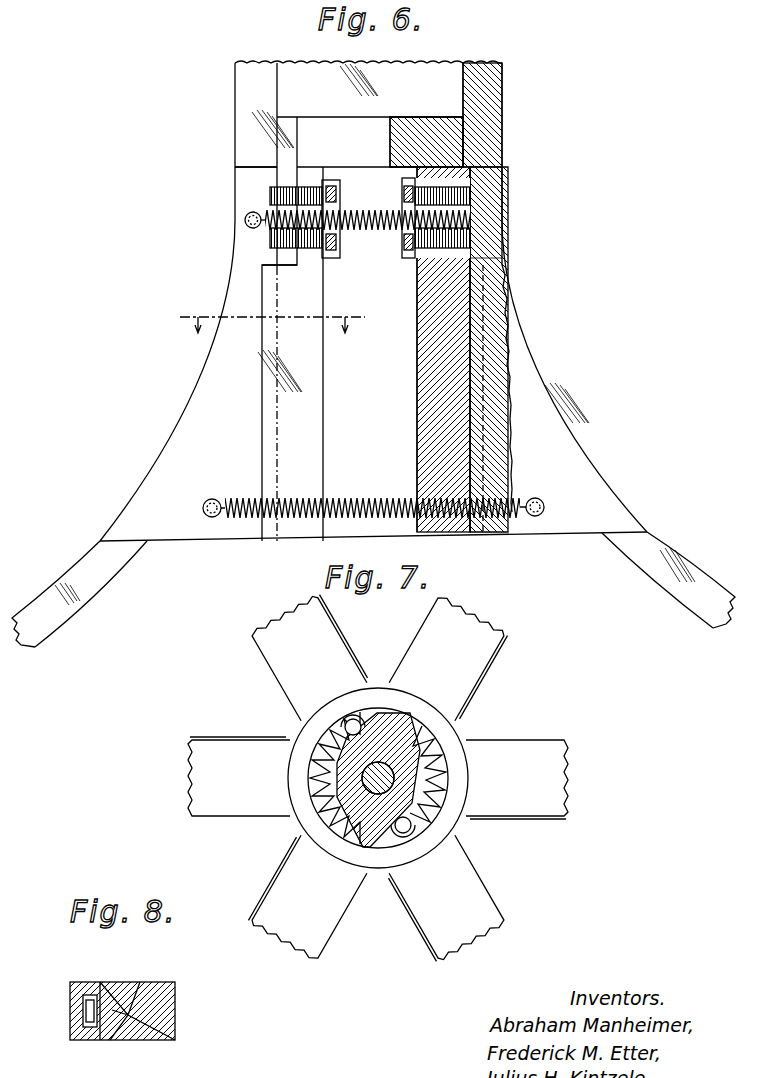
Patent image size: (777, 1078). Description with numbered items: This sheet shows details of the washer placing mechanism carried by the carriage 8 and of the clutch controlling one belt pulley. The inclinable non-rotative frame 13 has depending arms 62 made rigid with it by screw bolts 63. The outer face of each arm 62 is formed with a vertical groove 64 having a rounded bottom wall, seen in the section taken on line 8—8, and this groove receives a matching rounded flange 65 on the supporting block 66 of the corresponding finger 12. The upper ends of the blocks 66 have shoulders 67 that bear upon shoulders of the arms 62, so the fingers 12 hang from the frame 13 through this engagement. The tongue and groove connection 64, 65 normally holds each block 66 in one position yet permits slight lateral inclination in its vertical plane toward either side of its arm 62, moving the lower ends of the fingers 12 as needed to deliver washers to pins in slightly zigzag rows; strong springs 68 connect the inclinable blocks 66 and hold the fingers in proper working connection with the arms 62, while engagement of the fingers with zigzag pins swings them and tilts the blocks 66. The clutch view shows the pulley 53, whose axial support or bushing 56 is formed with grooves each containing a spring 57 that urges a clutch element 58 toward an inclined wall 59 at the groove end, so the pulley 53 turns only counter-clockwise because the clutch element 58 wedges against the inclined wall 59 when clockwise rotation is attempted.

In FIG. 6, the carriage 8 is at (272, 308).
In FIG. 6, the fingers 12 is at (92, 578).
In FIG. 8, the fingers 12 is at (105, 1030).
In FIG. 6, the non-rotative frame 13 is at (487, 123).
In FIG. 7, the pulley 53 is at (455, 677).
In FIG. 7, the axial support or bushing 56 is at (363, 813).
In FIG. 7, the spring 57 is at (318, 745).
In FIG. 7, the clutch element 58 is at (353, 719).
In FIG. 7, the inclined wall 59 is at (375, 715).
In FIG. 6, the depending arms 62 is at (297, 358).
In FIG. 8, the depending arms 62 is at (160, 1015).
In FIG. 6, the screw bolts 63 is at (333, 237).
In FIG. 8, the vertical groove 64 is at (130, 1022).
In FIG. 6, the rounded flange 65 is at (473, 335).
In FIG. 8, the rounded flange 65 is at (118, 1008).
In FIG. 6, the supporting block 66 is at (208, 422).
In FIG. 8, the supporting block 66 is at (103, 990).
In FIG. 6, the shoulders 67 is at (270, 258).
In FIG. 6, the springs 68 is at (370, 230).